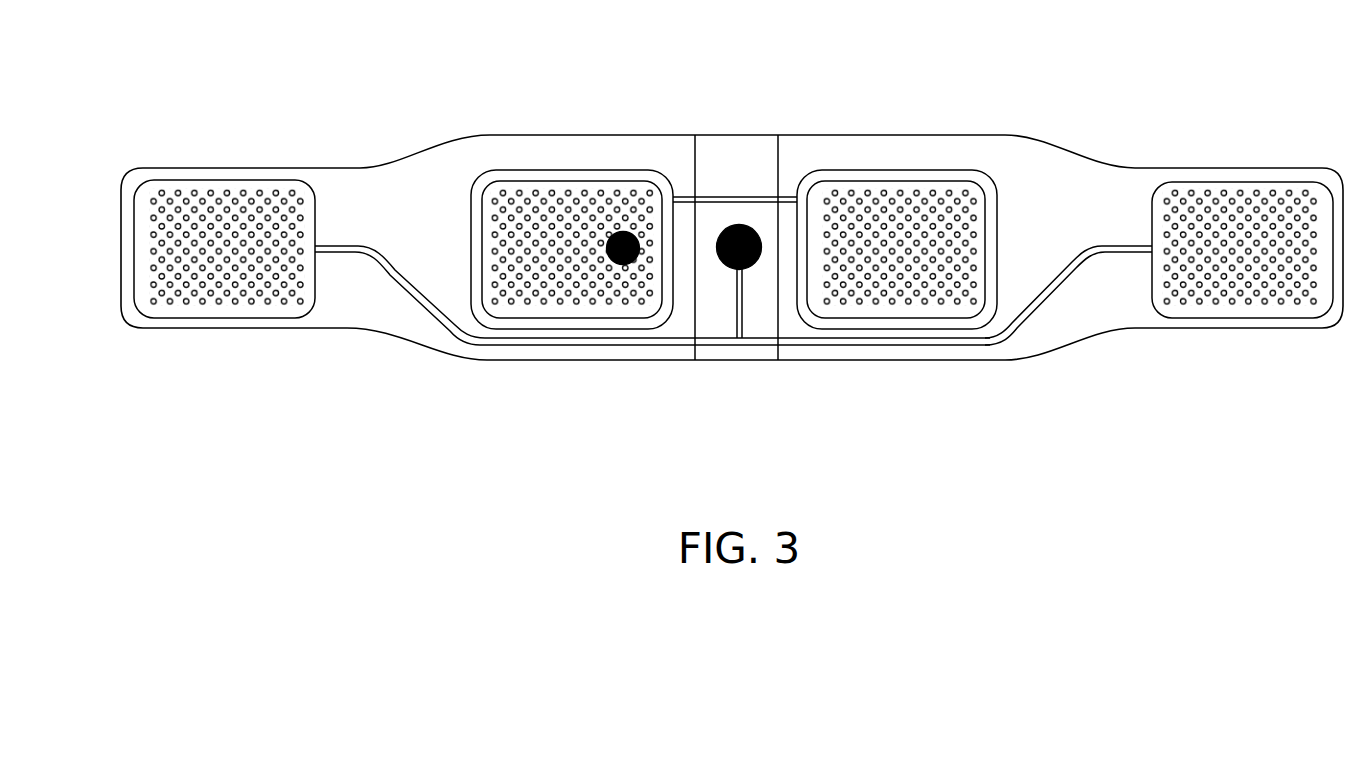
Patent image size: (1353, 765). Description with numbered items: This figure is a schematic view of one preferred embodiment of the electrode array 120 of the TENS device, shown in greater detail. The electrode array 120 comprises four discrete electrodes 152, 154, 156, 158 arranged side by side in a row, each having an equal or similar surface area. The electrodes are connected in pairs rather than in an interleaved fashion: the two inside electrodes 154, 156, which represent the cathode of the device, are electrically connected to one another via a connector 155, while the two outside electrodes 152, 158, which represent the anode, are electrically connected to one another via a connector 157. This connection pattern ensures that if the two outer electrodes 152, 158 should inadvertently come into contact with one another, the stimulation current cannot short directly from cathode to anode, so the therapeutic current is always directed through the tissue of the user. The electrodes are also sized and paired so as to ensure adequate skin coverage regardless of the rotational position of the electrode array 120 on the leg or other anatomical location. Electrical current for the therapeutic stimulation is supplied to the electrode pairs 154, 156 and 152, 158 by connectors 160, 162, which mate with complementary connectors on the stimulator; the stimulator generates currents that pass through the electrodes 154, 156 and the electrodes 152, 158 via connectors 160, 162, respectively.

The electrode array 120 is at (129, 423).
The electrode 152 is at (224, 249).
The electrode 154 is at (572, 249).
The connector 155 is at (768, 197).
The electrode 156 is at (897, 249).
The connector 157 is at (1097, 250).
The electrode 158 is at (1242, 250).
The connector 160 is at (621, 236).
The connector 162 is at (735, 226).